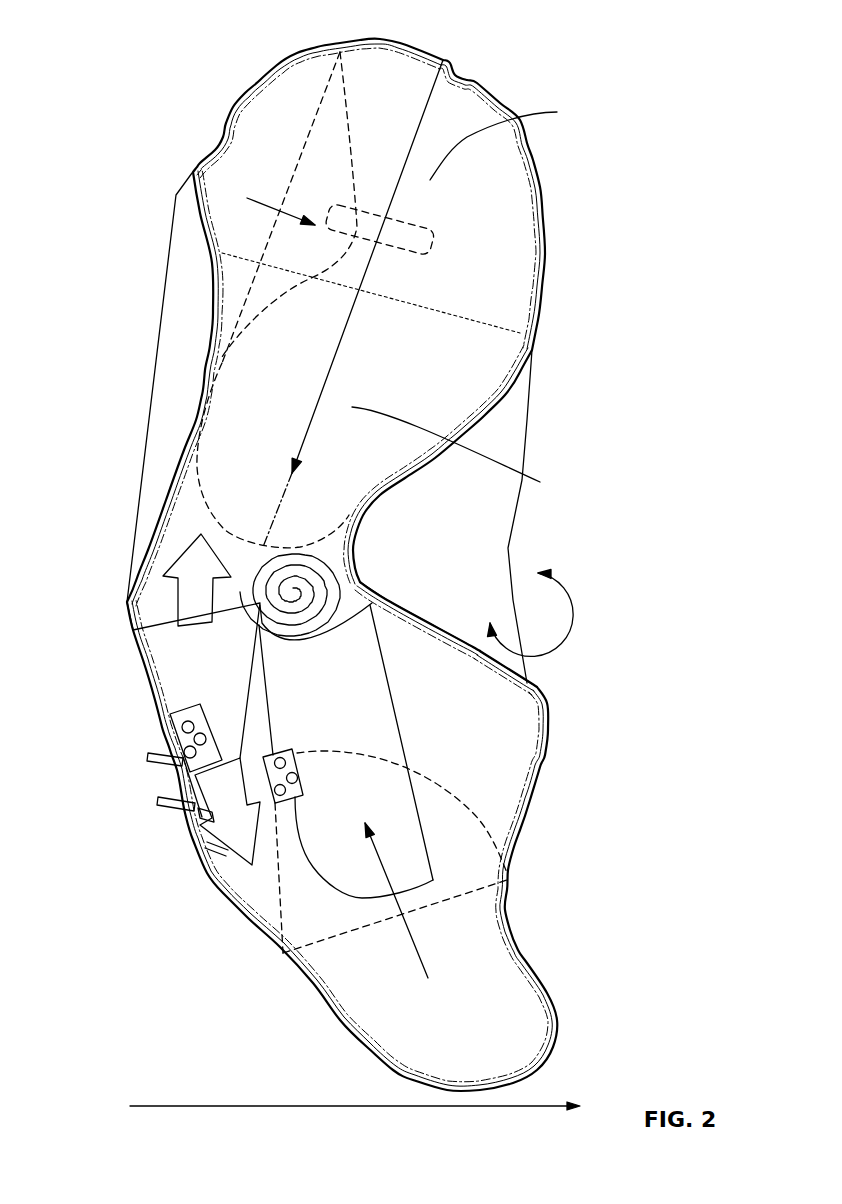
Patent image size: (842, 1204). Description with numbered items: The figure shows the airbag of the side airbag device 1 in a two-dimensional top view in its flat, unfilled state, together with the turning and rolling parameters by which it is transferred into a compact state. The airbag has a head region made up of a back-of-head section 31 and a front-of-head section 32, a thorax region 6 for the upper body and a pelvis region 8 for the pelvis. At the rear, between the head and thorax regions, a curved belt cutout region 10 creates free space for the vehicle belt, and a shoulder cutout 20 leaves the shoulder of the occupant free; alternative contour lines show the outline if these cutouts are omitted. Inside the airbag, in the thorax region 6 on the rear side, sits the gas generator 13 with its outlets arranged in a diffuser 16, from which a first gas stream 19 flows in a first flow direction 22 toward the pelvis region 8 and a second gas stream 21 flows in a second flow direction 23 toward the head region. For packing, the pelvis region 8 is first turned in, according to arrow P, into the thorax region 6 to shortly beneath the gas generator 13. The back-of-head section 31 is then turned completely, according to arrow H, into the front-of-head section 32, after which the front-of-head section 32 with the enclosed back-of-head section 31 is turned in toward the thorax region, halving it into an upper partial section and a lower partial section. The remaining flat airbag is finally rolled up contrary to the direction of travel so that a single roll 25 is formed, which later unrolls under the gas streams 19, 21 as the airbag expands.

The airbag device 1 is at (88, 37).
The thorax region 6 is at (411, 673).
The pelvis region 8 is at (429, 1020).
The belt cutout region 10 is at (165, 406).
The gas generator 13 is at (180, 765).
The diffuser 16 is at (198, 673).
The first gas stream 19 is at (235, 823).
The shoulder cutout 20 is at (443, 516).
The second gas stream 21 is at (200, 570).
The first flow direction 22 is at (252, 783).
The second flow direction 23 is at (160, 603).
The single roll 25 is at (308, 706).
The back-of-head section 31 is at (251, 173).
The front-of-head section 32 is at (385, 290).